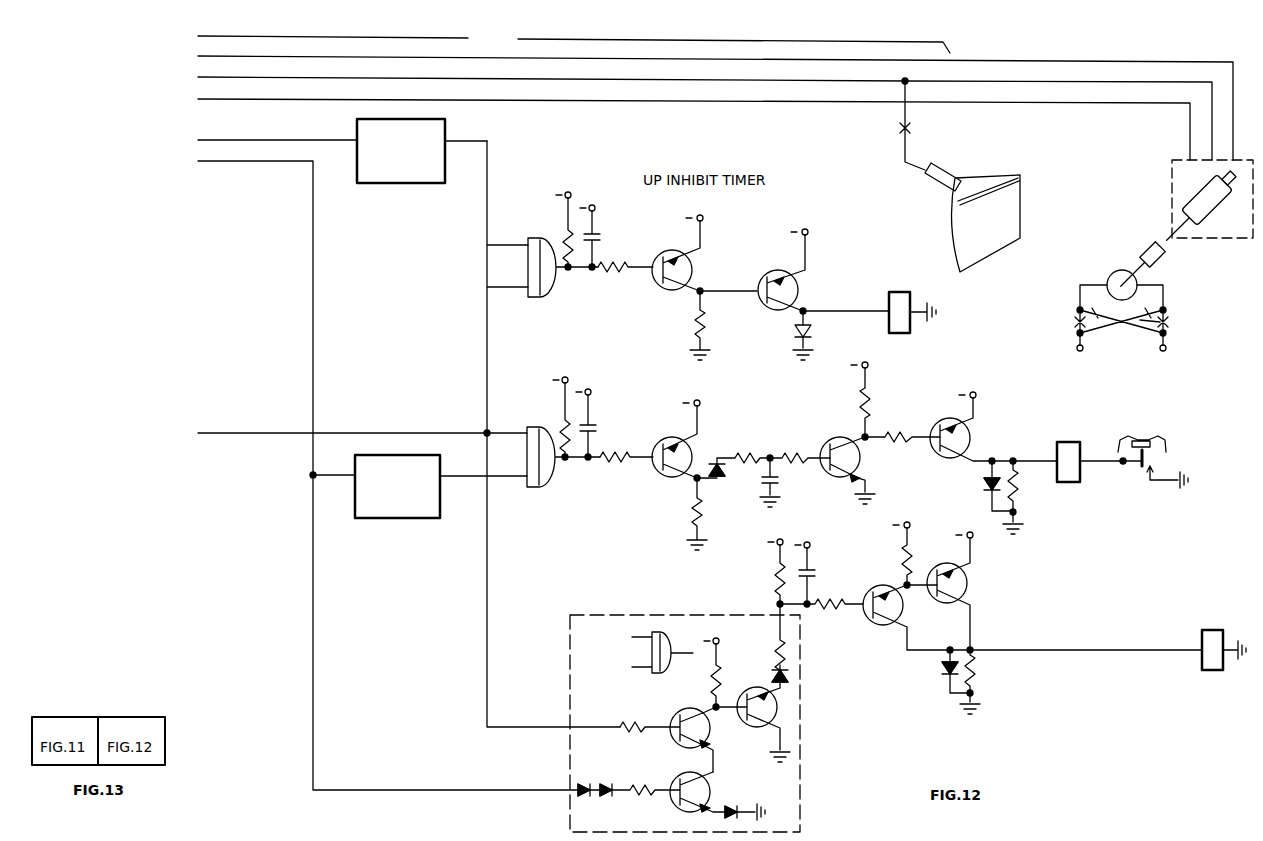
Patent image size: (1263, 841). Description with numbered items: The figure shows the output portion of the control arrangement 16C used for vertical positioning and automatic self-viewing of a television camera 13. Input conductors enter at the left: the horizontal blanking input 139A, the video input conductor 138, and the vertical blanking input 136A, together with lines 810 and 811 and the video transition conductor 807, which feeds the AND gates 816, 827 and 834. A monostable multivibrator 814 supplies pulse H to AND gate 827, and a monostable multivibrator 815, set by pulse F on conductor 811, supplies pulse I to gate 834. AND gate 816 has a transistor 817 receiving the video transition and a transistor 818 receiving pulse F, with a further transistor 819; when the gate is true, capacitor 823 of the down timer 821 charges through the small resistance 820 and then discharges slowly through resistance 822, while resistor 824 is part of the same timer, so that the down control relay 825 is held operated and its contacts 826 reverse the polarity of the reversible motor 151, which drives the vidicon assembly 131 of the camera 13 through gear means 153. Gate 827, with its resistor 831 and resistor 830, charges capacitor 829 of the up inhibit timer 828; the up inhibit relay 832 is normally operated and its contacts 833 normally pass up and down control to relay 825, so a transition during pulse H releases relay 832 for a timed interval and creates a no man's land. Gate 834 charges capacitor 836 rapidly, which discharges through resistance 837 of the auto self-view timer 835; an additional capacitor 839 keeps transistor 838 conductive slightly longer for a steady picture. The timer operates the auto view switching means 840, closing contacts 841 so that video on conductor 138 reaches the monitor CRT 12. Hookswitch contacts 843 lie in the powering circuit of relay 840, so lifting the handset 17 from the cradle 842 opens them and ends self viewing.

The control arrangement 16C is at (574, 43).
The horizontal blanking input 139A is at (262, 54).
The video input conductor 138 is at (247, 75).
The vertical blanking input 136A is at (262, 96).
The input line 810 is at (247, 137).
The conductor 811 is at (247, 158).
The conductor 807 is at (247, 430).
The monostable multivibrator 814 is at (422, 151).
The monostable multivibrator 815 is at (420, 486).
The contacts 841 is at (913, 128).
The CRT 12 is at (1022, 181).
The television camera 13 is at (1172, 180).
The vidicon assembly 131 is at (1222, 212).
The gear means 153 is at (1162, 262).
The reversible motor 151 is at (1107, 275).
The contacts 826 is at (1092, 330).
The contacts 833 is at (1165, 305).
The AND gate 827 is at (535, 298).
The resistor 831 is at (558, 228).
The capacitor 829 is at (600, 236).
The resistor 830 is at (625, 278).
The up inhibit timer 828 is at (742, 228).
The up inhibit relay 832 is at (890, 292).
The AND gate 834 is at (550, 502).
The capacitor 836 is at (592, 418).
The resistance 837 is at (632, 470).
The auto self-view timer 835 is at (843, 417).
The transistor 838 is at (862, 458).
The capacitor 839 is at (778, 485).
The auto view switching means 840 is at (1058, 442).
The cradle 842 is at (1150, 456).
The handset 17 is at (1162, 439).
The hookswitch contacts 843 is at (1145, 470).
The resistor 824 is at (765, 572).
The capacitor 823 is at (812, 565).
The resistance 822 is at (822, 612).
The down timer 821 is at (926, 713).
The down control relay 825 is at (1210, 672).
The AND gate 816 is at (630, 612).
The transistor 817 is at (686, 708).
The transistor 818 is at (686, 775).
The transistor 819 is at (762, 730).
The resistance 820 is at (770, 645).